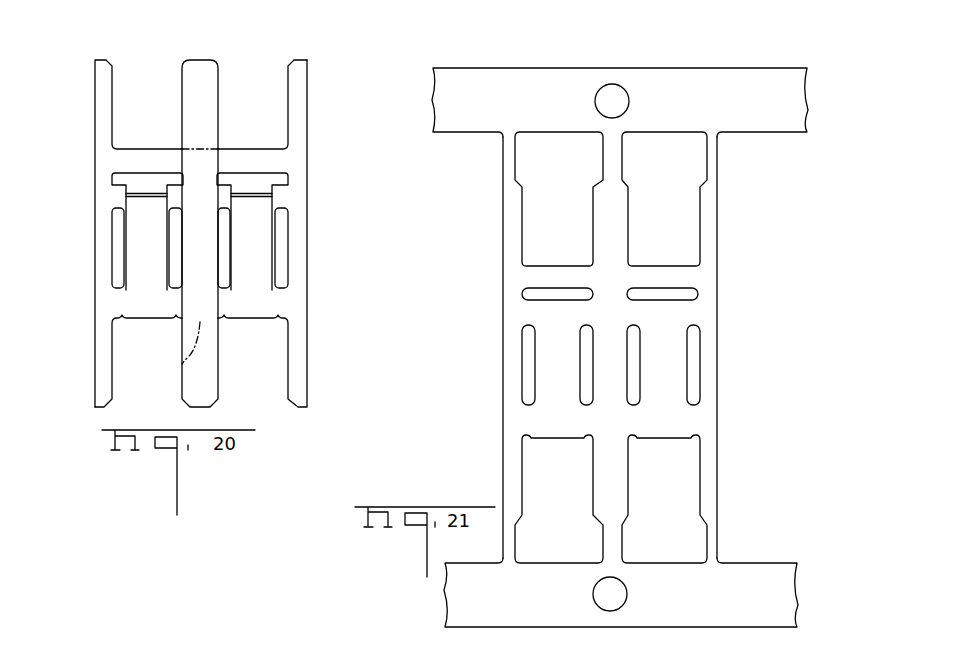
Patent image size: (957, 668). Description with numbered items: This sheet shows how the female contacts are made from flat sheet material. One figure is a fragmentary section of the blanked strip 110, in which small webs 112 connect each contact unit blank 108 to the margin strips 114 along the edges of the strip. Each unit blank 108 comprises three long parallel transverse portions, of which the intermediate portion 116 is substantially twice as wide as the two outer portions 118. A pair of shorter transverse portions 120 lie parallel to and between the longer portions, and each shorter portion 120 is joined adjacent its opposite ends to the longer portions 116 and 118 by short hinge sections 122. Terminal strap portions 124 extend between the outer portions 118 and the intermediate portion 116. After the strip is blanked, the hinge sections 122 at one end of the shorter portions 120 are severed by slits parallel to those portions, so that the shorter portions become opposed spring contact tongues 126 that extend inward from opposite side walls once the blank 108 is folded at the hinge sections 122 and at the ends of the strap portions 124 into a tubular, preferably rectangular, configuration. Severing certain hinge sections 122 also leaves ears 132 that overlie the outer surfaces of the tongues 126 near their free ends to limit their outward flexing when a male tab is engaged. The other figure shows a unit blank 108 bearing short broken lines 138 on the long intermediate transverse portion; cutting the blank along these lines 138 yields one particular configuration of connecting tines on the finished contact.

In FIG. 20, the contact unit blank 108 is at (316, 206).
In FIG. 21, the contact unit blank 108 is at (726, 296).
In FIG. 21, the blanked strip 110 is at (633, 63).
In FIG. 21, the small webs 112 is at (503, 153).
In FIG. 21, the margin strips 114 is at (527, 82).
In FIG. 20, the intermediate portion 116 is at (210, 110).
In FIG. 21, the intermediate portion 116 is at (617, 223).
In FIG. 20, the outer portions 118 is at (95, 121).
In FIG. 21, the outer portions 118 is at (503, 256).
In FIG. 20, the shorter transverse portions 120 is at (126, 255).
In FIG. 21, the shorter transverse portions 120 is at (535, 371).
In FIG. 20, the short hinge sections 122 is at (136, 304).
In FIG. 21, the short hinge sections 122 is at (528, 315).
In FIG. 20, the terminal strap portions 124 is at (140, 156).
In FIG. 21, the terminal strap portions 124 is at (537, 273).
In FIG. 20, the spring contact tongues 126 is at (153, 252).
In FIG. 20, the ears 132 is at (292, 190).
In FIG. 20, the short broken lines 138 is at (180, 149).